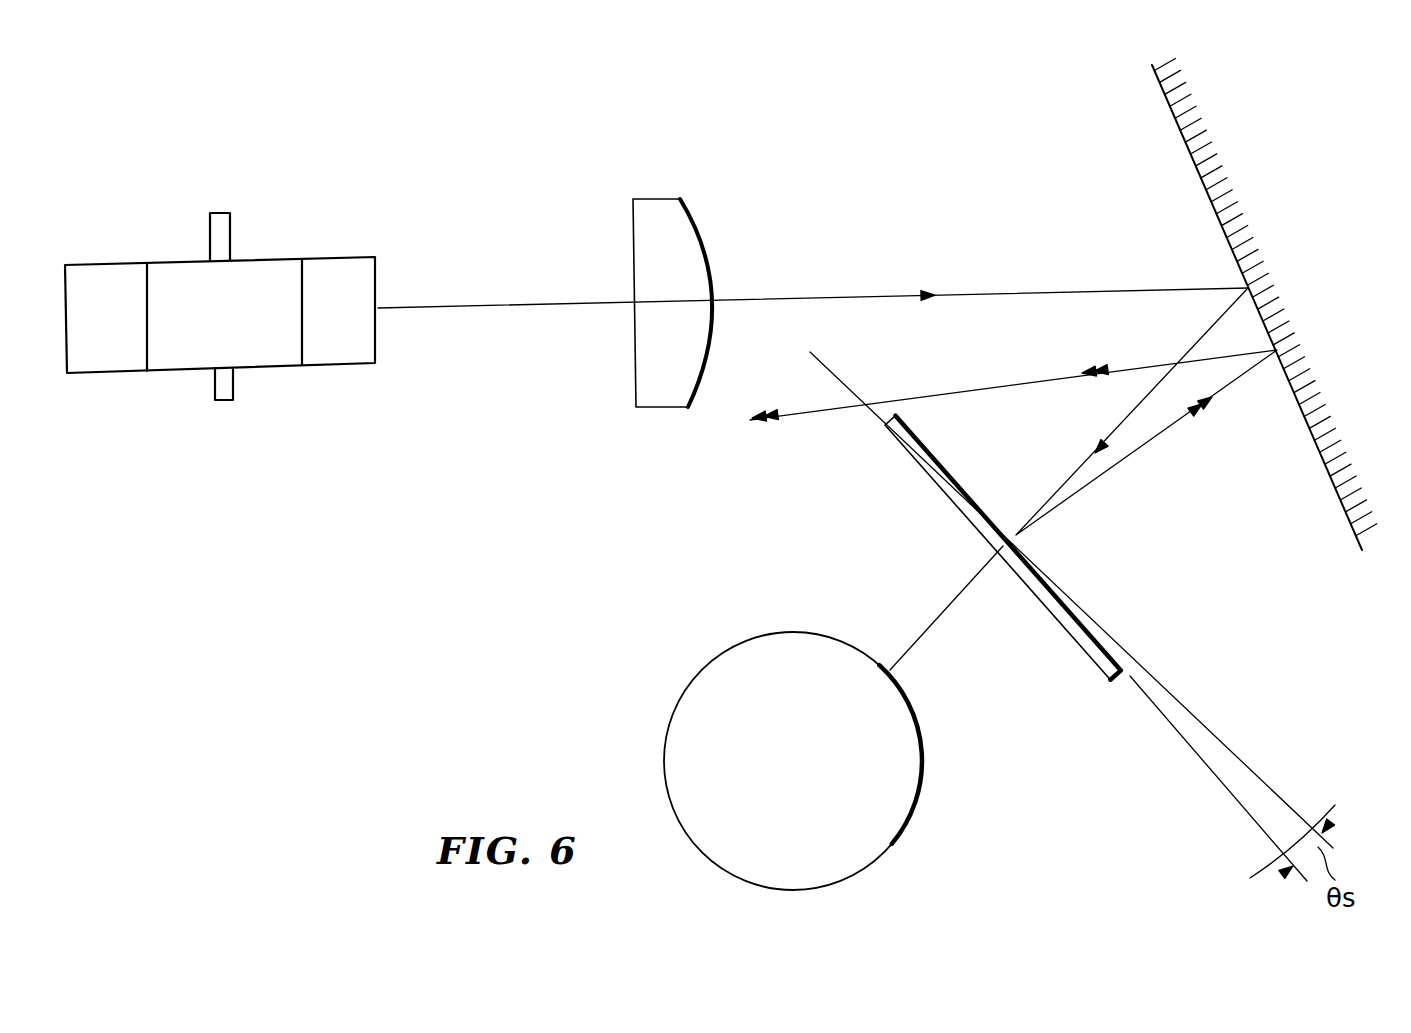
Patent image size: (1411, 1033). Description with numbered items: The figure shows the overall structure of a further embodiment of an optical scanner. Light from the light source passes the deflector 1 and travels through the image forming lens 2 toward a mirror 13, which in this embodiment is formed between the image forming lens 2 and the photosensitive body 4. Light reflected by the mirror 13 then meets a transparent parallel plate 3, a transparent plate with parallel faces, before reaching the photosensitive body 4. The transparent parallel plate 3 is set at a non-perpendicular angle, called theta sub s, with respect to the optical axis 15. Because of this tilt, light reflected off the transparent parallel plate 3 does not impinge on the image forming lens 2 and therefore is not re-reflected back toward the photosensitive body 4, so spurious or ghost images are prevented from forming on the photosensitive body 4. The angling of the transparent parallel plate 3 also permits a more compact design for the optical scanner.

The deflector 1 is at (270, 264).
The image forming lens 2 is at (663, 403).
The transparent parallel plate 3 is at (1095, 657).
The photosensitive body 4 is at (908, 827).
The mirror 13 is at (1156, 62).
The optical axis 15 is at (937, 625).